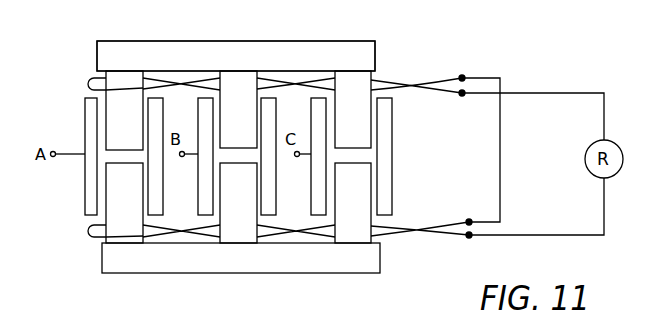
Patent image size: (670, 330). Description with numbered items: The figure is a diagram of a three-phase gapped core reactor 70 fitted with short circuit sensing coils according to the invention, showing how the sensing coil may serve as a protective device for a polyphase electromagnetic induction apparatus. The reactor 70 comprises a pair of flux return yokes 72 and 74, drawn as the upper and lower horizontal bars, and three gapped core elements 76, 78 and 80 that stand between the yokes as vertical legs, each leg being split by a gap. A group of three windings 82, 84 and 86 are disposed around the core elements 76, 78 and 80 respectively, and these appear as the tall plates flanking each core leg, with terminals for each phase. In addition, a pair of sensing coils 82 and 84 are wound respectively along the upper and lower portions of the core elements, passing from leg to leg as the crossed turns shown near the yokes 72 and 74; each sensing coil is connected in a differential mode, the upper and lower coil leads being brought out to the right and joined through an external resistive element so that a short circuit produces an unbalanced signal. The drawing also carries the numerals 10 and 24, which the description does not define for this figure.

The transducer device 10 is at (89, 321).
The armature 24 is at (326, 305).
The reactor 70 is at (275, 38).
The flux return yoke 72 is at (175, 40).
The flux return yoke 74 is at (235, 274).
The gapped core element 76 is at (100, 74).
The gapped core element 78 is at (220, 71).
The gapped core element 80 is at (373, 72).
The winding 82 is at (85, 117).
The winding 84 is at (452, 258).
The winding 86 is at (326, 156).